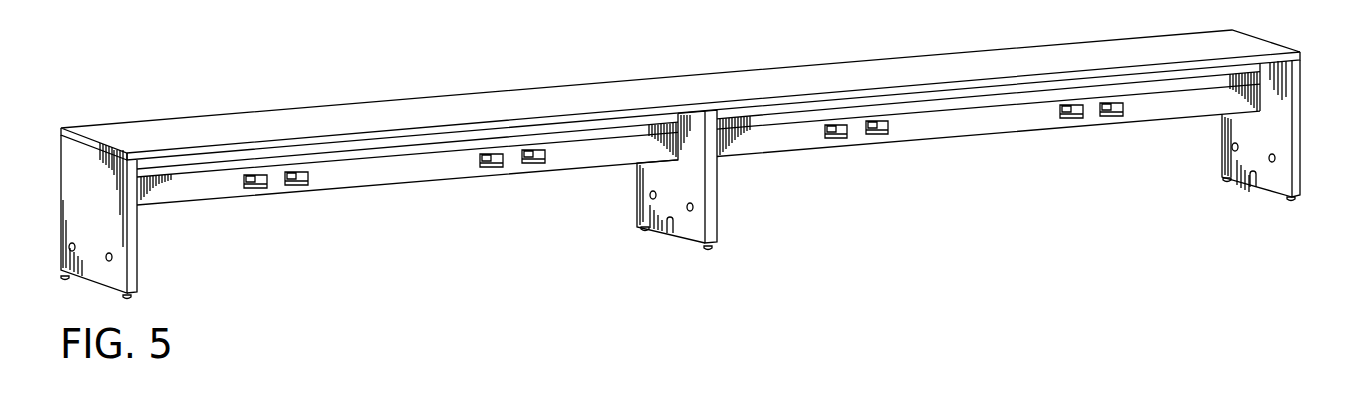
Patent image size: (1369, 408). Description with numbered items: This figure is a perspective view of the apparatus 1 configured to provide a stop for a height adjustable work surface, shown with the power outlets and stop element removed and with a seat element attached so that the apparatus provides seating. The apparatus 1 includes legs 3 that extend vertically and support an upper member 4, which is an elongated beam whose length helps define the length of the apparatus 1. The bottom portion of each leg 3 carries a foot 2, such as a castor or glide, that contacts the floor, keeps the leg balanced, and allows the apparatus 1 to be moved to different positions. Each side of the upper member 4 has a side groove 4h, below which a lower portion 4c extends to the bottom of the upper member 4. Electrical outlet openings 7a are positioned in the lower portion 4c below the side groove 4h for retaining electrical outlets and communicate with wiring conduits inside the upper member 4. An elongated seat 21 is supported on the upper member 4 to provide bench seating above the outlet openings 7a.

The apparatus 1 is at (793, 231).
The seat 21 is at (250, 122).
The leg 3 is at (1302, 140).
The upper member 4 is at (380, 183).
The lower portion 4c is at (567, 168).
The side groove 4h is at (952, 103).
The electrical outlet opening 7a is at (267, 185).
The foot 2 is at (1222, 181).